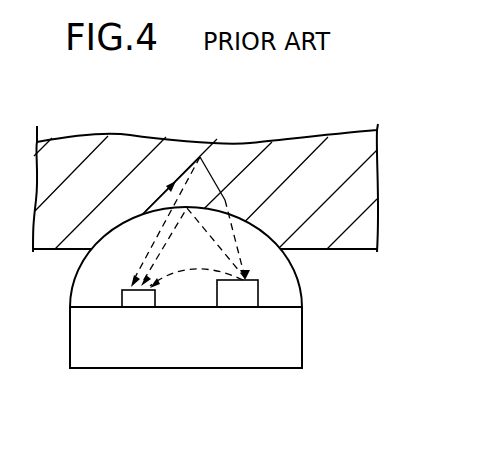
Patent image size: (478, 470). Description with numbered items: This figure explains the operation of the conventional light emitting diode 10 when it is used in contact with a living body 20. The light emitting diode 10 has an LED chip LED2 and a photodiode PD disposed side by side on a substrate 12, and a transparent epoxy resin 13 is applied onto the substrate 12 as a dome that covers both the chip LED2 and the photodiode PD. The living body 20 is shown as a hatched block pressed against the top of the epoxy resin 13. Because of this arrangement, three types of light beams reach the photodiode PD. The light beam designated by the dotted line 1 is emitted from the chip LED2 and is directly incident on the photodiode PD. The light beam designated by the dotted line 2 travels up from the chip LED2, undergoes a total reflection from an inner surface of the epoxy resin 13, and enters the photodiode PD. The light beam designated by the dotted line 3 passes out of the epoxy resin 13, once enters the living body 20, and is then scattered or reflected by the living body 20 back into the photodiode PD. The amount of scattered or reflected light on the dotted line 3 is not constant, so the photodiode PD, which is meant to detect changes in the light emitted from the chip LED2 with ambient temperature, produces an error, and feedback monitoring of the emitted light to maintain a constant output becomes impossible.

The light emitting diode 10 is at (152, 375).
The substrate 12 is at (282, 345).
The transparent epoxy resin 13 is at (277, 270).
The living body 20 is at (352, 210).
The photodiode PD is at (127, 302).
The LED chip LED2 is at (247, 292).
The light beam (dotted line) 1 is at (196, 282).
The light beam (dotted line) 2 is at (195, 247).
The light beam (dotted line) 3 is at (188, 222).